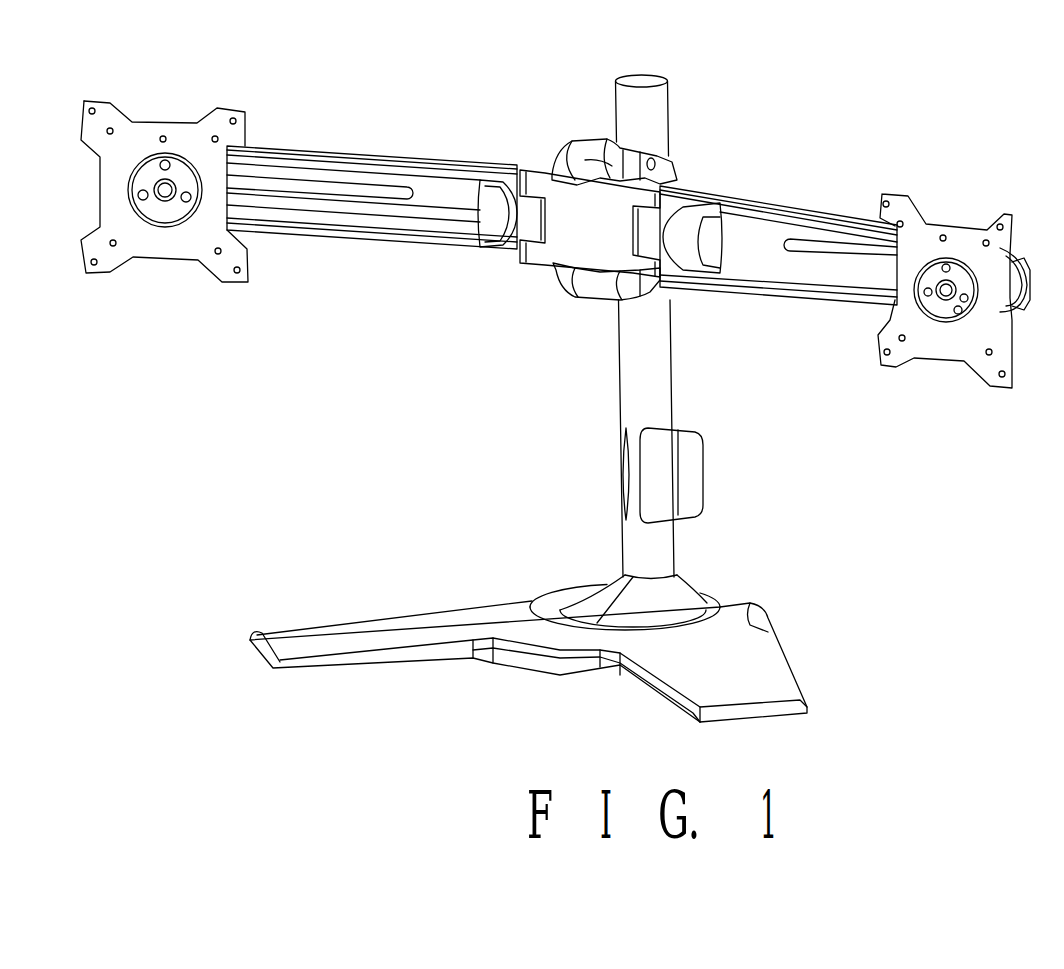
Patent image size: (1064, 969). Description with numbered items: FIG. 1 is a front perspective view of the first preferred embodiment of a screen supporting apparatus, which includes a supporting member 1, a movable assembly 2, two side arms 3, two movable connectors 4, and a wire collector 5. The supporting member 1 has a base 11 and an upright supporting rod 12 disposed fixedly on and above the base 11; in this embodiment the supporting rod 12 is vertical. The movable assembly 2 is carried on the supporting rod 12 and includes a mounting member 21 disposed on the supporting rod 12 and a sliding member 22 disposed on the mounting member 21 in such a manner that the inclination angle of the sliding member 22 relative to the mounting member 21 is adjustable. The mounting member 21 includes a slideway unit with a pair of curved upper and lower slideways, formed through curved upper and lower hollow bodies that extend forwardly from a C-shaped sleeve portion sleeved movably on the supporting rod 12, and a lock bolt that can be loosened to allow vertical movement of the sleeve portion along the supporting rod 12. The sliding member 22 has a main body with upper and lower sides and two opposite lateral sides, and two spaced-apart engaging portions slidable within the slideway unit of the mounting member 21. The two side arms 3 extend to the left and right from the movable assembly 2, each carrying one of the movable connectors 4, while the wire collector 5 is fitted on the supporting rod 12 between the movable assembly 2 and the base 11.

The supporting member 1 is at (598, 560).
The movable assembly 2 is at (580, 127).
The side arms 3 is at (425, 188).
The movable connectors 4 is at (167, 240).
The wire collector 5 is at (690, 470).
The base 11 is at (757, 678).
The upright supporting rod 12 is at (665, 380).
The mounting member 21 is at (672, 178).
The sliding member 22 is at (563, 238).